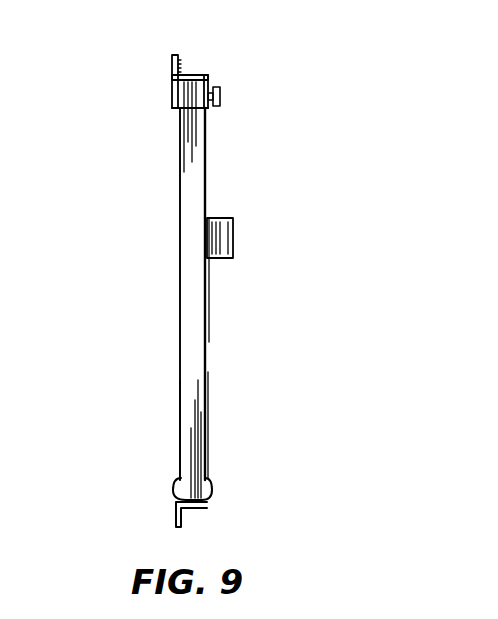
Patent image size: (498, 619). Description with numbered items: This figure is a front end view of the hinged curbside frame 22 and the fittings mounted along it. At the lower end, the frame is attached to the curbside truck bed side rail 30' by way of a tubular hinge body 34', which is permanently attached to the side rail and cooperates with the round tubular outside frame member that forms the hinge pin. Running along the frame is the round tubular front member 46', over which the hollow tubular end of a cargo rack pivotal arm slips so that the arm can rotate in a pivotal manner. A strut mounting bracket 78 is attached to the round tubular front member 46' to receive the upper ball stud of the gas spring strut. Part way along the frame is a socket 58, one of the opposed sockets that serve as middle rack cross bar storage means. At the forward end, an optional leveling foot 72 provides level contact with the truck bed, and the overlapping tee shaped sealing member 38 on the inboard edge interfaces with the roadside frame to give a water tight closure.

The curbside frame 22 is at (208, 388).
The tee shaped sealing member 38 is at (175, 78).
The leveling foot 72 is at (220, 90).
The socket 58 is at (233, 232).
The strut mounting bracket 78 is at (205, 291).
The round tubular front member 46' is at (126, 427).
The tubular hinge body 34' is at (257, 493).
The truck bed side rail 30' is at (114, 525).